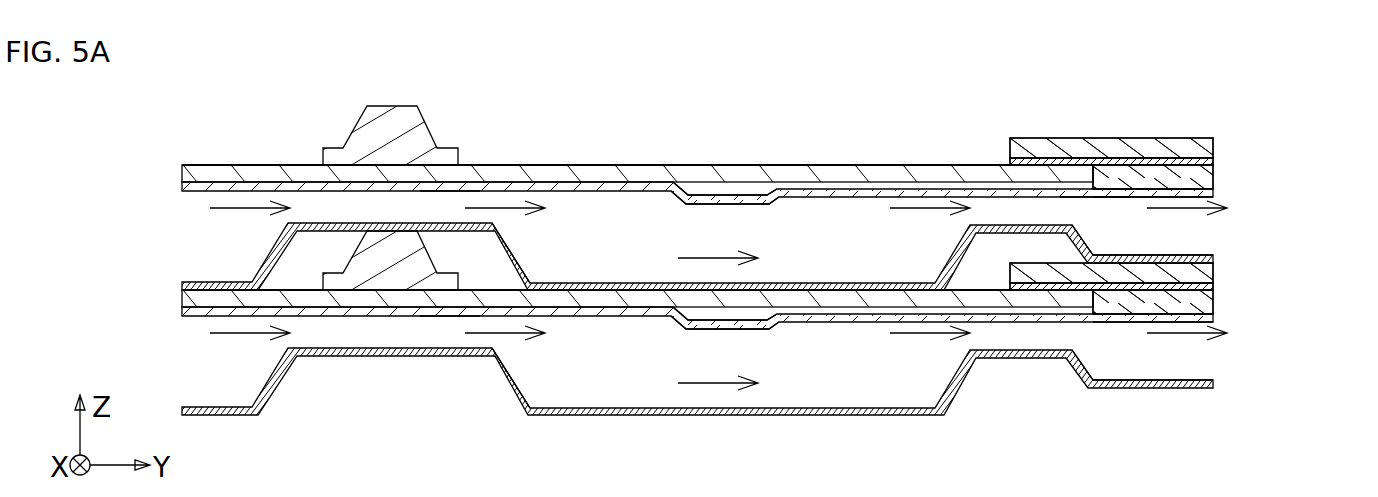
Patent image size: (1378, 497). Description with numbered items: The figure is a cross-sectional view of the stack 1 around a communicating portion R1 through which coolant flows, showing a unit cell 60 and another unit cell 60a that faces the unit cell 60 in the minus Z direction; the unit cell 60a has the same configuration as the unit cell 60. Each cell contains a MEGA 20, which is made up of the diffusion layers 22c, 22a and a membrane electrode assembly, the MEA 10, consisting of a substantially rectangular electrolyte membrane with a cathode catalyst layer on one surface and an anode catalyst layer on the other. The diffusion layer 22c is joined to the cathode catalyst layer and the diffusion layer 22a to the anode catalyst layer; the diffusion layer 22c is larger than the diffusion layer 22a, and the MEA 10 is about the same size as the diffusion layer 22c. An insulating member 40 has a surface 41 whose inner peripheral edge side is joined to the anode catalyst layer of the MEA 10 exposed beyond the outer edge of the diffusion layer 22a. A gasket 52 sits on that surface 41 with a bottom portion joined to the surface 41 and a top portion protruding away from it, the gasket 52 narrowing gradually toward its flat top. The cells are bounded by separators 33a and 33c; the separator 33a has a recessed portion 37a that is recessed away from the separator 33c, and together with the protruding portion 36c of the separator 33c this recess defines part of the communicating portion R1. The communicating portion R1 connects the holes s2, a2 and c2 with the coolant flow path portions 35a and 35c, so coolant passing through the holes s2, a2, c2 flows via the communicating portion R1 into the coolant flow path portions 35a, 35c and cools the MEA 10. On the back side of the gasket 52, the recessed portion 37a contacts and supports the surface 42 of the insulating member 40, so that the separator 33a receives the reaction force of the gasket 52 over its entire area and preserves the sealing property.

The stack 1 is at (1302, 78).
The membrane electrode assembly (MEA) 10 is at (1213, 160).
The MEGA 20 is at (1287, 122).
The diffusion layer 22a is at (1213, 185).
The diffusion layer 22c is at (1213, 148).
The separator 33a is at (1213, 197).
The separator 33c is at (1213, 258).
The coolant flow path portion 35a is at (1098, 197).
The coolant flow path portion 35c is at (1143, 255).
The protruding portion 36c is at (470, 233).
The recessed portion 37a is at (437, 193).
The insulating member 40 is at (608, 145).
The surface 41 is at (520, 165).
The surface 42 is at (785, 183).
The gasket 52 is at (373, 120).
The unit cell 60 is at (1332, 200).
The unit cell 60a is at (1331, 335).
The hole s2 is at (182, 172).
The hole a2 is at (182, 186).
The hole c2 is at (182, 286).
The communicating portion R1 is at (650, 235).